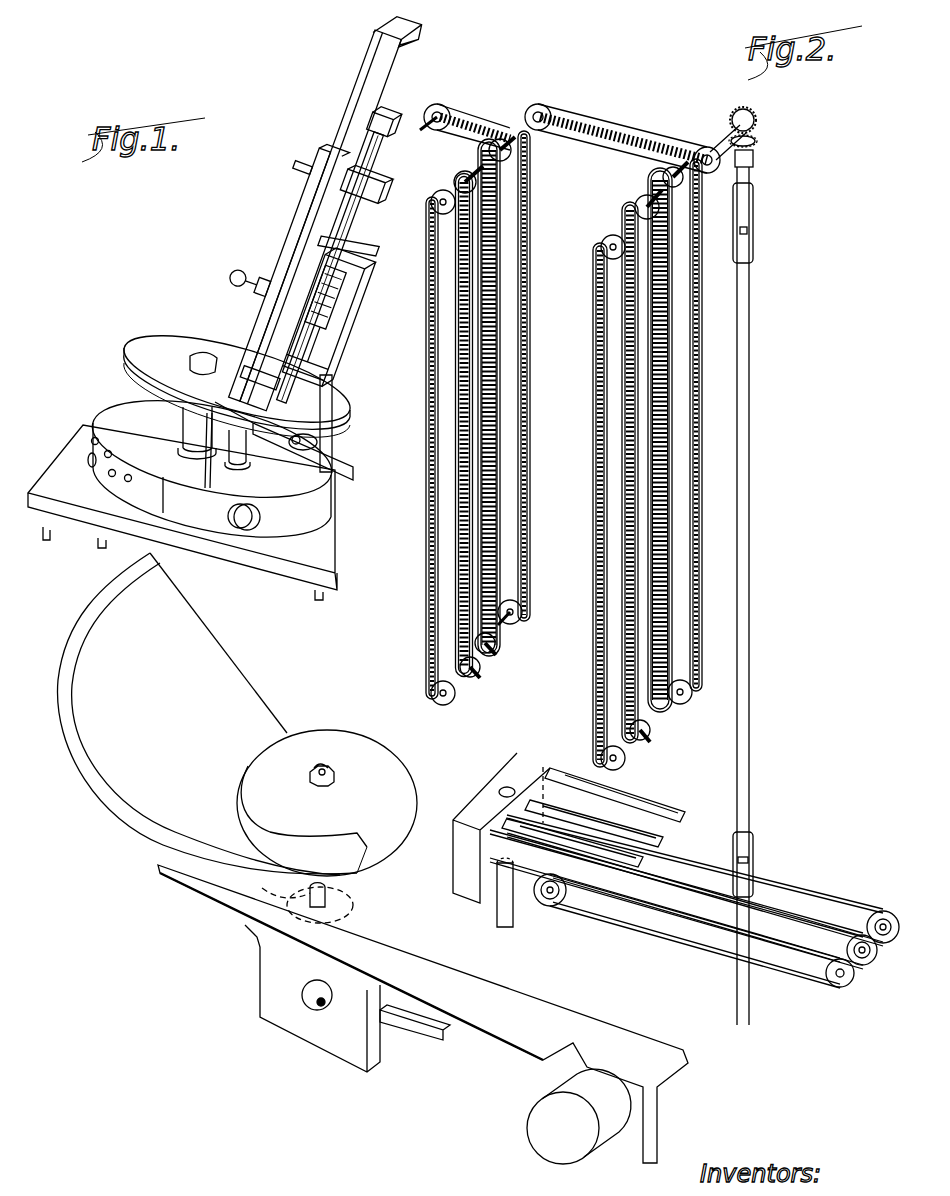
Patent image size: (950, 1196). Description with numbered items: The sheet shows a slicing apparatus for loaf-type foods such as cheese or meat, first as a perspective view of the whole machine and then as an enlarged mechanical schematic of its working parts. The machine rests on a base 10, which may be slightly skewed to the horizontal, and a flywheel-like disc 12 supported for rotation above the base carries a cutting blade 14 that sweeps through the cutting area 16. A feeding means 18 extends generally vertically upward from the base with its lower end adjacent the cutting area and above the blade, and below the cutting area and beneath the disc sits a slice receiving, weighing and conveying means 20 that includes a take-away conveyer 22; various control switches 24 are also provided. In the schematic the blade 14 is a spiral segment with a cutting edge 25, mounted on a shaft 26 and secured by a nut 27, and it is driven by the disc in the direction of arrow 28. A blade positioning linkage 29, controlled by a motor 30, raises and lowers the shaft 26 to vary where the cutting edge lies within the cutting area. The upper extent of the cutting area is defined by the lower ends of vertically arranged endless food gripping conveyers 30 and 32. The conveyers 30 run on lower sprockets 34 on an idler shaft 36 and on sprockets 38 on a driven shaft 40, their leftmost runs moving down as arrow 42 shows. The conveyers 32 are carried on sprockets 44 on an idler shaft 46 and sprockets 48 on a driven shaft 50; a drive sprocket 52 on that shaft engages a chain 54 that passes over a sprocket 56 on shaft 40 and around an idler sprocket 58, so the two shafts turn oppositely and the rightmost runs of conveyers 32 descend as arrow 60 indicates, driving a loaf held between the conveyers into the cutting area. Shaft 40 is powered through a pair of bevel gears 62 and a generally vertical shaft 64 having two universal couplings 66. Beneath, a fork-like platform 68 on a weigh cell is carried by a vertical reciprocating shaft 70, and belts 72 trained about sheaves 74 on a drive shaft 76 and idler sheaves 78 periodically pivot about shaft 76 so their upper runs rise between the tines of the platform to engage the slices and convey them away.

In FIG. 1, the base 10 is at (63, 433).
In FIG. 1, the flywheel-like disc 12 is at (158, 326).
In FIG. 1, the cutting blade 14 is at (190, 372).
In FIG. 1, the cutting area 16 is at (300, 444).
In FIG. 2, the cutting area 16 is at (700, 782).
In FIG. 1, the feeding means 18 is at (283, 233).
In FIG. 2, the feeding means 18 is at (718, 528).
In FIG. 1, the slice receiving, weighing and conveying means 20 is at (275, 440).
In FIG. 2, the slice receiving, weighing and conveying means 20 is at (713, 873).
In FIG. 1, the take-away conveyer 22 is at (342, 478).
In FIG. 1, the control switches 24 is at (125, 490).
In FIG. 1, the cutting edge 25 is at (112, 818).
In FIG. 1, the shaft 26 is at (348, 903).
In FIG. 1, the nut 27 is at (332, 780).
In FIG. 1, the arrow 28 is at (160, 700).
In FIG. 1, the blade positioning linkage 29 is at (437, 1052).
In FIG. 1, the motor / food gripping conveyers 30 is at (546, 1127).
In FIG. 2, the motor / food gripping conveyers 30 is at (695, 350).
In FIG. 2, the food gripping conveyers 32 is at (450, 270).
In FIG. 2, the lower sprockets 34 is at (690, 680).
In FIG. 2, the idler shaft 36 is at (680, 705).
In FIG. 2, the sprockets 38 is at (658, 180).
In FIG. 2, the driven shaft 40 is at (725, 142).
In FIG. 2, the arrow 42 is at (588, 560).
In FIG. 2, the sprockets 44 is at (512, 665).
In FIG. 2, the idler shaft 46 is at (520, 608).
In FIG. 2, the sprockets 48 is at (470, 148).
In FIG. 2, the driven shaft 50 is at (540, 104).
In FIG. 2, the drive sprocket 52 is at (562, 108).
In FIG. 2, the chain 54 is at (632, 140).
In FIG. 2, the sprocket 56 is at (756, 160).
In FIG. 2, the idler sprocket 58 is at (462, 105).
In FIG. 2, the arrow 60 is at (448, 555).
In FIG. 2, the bevel gears 62 is at (758, 124).
In FIG. 2, the shaft 64 is at (752, 328).
In FIG. 2, the universal couplings 66 is at (752, 205).
In FIG. 2, the fork-like platform 68 is at (555, 775).
In FIG. 2, the reciprocating shaft 70 is at (533, 850).
In FIG. 2, the belts 72 is at (783, 927).
In FIG. 2, the sheaves 74 is at (850, 976).
In FIG. 2, the drive shaft 76 is at (885, 910).
In FIG. 2, the idler sheaves 78 is at (552, 906).